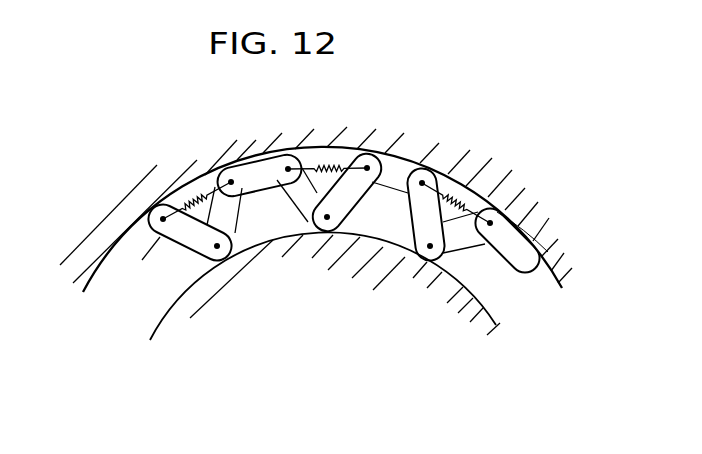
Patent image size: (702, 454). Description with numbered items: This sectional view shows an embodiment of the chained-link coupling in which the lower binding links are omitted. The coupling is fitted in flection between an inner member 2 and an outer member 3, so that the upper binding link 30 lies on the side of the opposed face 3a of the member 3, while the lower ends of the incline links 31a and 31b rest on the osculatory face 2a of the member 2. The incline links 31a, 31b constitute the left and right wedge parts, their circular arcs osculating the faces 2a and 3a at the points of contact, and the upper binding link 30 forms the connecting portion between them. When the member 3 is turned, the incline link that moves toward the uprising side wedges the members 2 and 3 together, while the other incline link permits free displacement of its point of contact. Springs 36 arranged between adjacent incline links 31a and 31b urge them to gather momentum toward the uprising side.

The member 2 is at (467, 308).
The osculatory face 2a is at (493, 321).
The member 3 is at (558, 268).
The opposed face 3a is at (553, 276).
The upper binding link 30 is at (400, 152).
The incline link 31a is at (310, 236).
The incline link 31b is at (412, 246).
The spring 36 is at (330, 163).